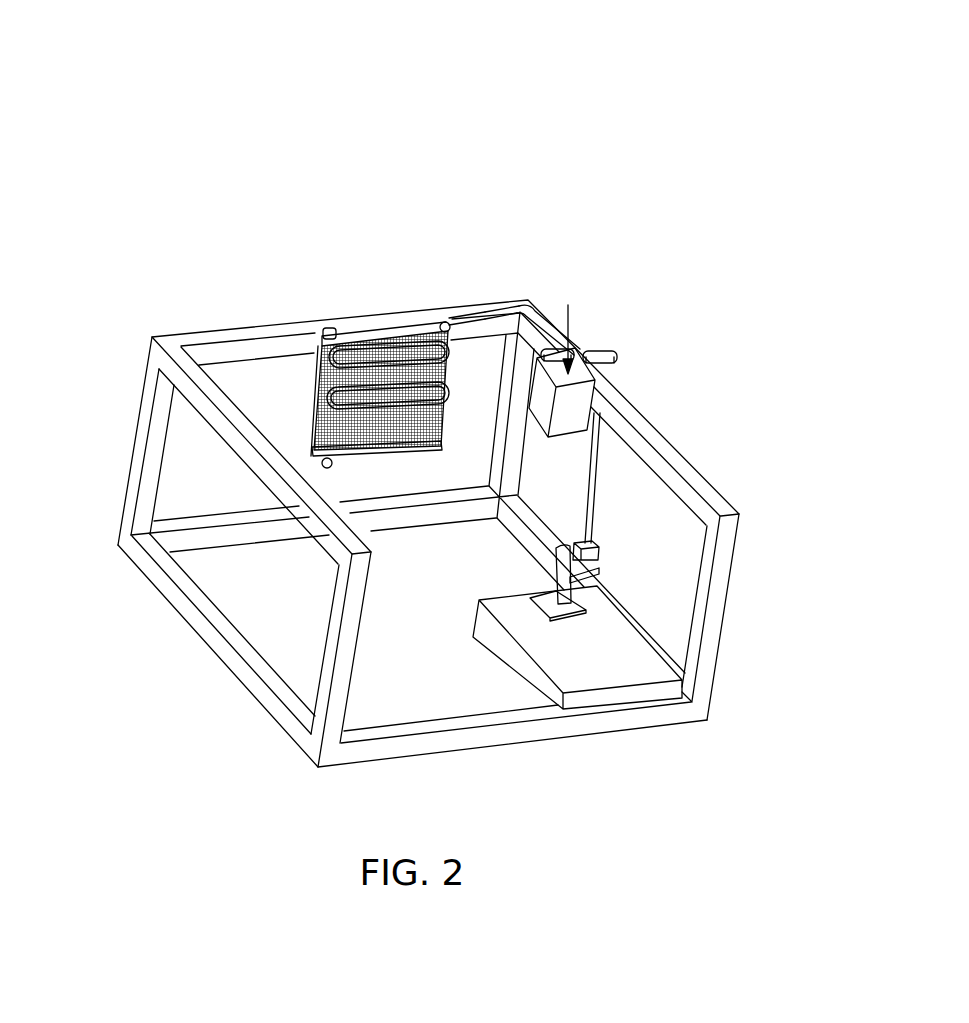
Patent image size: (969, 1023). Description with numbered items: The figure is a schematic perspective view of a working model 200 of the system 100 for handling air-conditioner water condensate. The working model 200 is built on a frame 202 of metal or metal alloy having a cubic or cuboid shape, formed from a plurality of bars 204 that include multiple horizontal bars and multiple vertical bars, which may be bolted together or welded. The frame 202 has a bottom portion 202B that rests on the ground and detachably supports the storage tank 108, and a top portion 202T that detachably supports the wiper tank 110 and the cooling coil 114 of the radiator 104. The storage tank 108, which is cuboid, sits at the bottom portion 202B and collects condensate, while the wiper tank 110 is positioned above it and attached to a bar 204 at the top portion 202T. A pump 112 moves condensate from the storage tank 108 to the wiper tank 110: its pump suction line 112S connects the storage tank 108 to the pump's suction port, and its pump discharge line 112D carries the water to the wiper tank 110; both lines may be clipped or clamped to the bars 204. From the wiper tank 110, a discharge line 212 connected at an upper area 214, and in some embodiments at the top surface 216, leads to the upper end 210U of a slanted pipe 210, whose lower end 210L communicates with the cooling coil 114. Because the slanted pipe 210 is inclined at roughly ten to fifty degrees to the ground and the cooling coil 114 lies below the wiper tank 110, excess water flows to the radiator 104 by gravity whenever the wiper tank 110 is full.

The system 100 is at (647, 67).
The working model 200 is at (634, 210).
The frame 202 is at (158, 321).
The top portion 202T is at (761, 506).
The bottom portion 202B is at (726, 719).
The bars 204 is at (200, 424).
The radiator 104 is at (343, 329).
The cooling coil 114 is at (397, 332).
The slanted pipe 210 is at (493, 327).
The lower end 210L is at (457, 326).
The upper end 210U is at (515, 326).
The discharge line 212 is at (547, 327).
The upper area 214 is at (585, 354).
The top surface 216 is at (569, 326).
The wiper tank 110 is at (603, 412).
The pump 112 is at (603, 553).
The pump discharge line 112D is at (603, 457).
The pump suction line 112S is at (605, 577).
The storage tank 108 is at (518, 657).